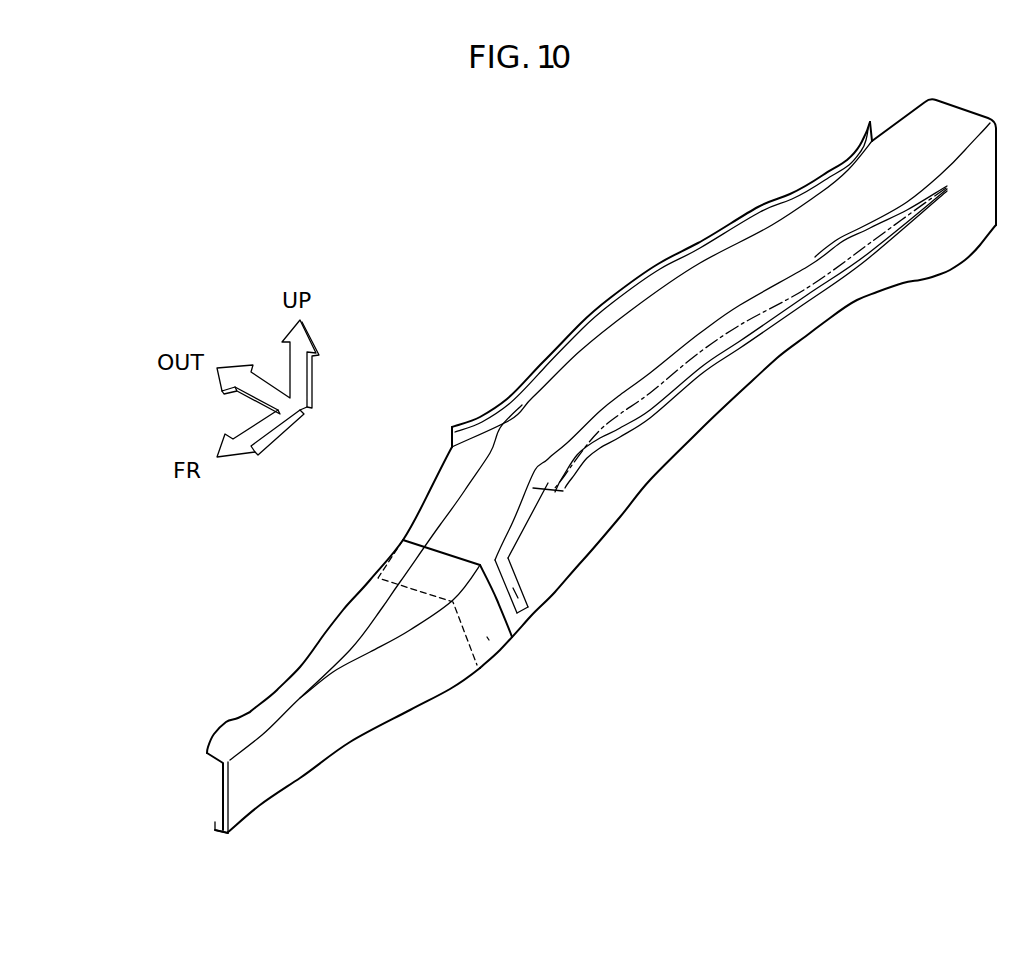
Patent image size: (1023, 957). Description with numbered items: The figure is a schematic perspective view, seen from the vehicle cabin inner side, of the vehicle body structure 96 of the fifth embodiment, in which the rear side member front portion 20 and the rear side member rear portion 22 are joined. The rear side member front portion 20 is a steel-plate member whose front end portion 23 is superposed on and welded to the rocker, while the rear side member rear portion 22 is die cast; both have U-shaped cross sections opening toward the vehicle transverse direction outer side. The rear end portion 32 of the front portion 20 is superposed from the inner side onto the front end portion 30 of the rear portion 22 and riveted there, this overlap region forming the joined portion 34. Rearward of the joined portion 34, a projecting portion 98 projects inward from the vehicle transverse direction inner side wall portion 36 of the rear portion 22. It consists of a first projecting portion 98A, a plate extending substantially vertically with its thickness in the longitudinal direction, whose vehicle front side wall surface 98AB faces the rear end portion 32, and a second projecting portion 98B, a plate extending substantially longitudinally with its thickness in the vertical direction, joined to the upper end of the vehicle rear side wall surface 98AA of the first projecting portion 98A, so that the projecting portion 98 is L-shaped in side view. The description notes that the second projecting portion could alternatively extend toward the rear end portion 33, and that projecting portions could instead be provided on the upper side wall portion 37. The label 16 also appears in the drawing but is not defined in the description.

The roof side rail structure 16 is at (501, 245).
The vehicle body structure 96 is at (553, 301).
The rear side member front portion 20 is at (377, 712).
The rear side member rear portion 22 is at (677, 438).
The front end portion 23 is at (228, 808).
The front end portion 30 is at (520, 627).
The rear end portion 32 is at (522, 625).
The rear end portion 33 is at (950, 252).
The joined portion 34 is at (485, 635).
The vehicle transverse direction inner side wall portion 36 is at (723, 370).
The upper side wall portion 37 is at (548, 441).
The projecting portion 98 is at (537, 591).
The first projecting portion 98A is at (528, 580).
The second projecting portion 98B is at (543, 513).
The vehicle rear side wall surface 98AA is at (543, 583).
The vehicle front side wall surface 98AB is at (527, 617).